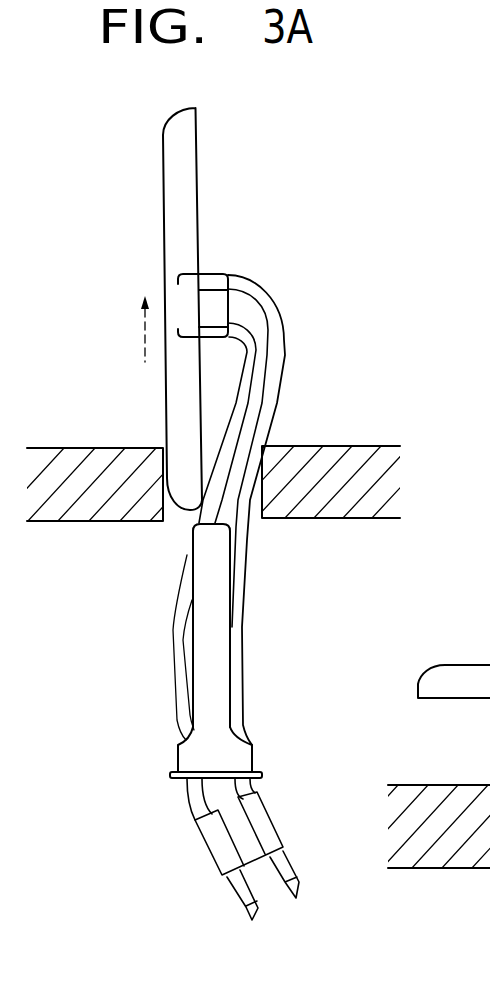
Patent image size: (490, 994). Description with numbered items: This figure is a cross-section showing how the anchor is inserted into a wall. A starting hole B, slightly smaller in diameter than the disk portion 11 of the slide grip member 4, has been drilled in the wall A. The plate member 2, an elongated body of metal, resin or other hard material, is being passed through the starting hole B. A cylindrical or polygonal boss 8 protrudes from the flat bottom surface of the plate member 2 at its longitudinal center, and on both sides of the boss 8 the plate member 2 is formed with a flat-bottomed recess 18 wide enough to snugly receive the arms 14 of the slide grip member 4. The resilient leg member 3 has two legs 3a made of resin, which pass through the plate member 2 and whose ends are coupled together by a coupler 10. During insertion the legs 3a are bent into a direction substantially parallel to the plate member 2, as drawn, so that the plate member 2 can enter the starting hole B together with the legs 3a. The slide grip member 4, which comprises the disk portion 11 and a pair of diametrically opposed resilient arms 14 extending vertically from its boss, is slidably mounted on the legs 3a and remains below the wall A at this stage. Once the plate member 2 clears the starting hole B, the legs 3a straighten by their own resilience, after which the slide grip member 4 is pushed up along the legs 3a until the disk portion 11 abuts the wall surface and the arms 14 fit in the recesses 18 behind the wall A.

The plate member 2 is at (173, 153).
The flat-bottomed recess 18 is at (218, 310).
The boss 8 is at (212, 280).
The resilient leg member 3 is at (285, 487).
The legs 3a is at (255, 382).
The wall A is at (385, 490).
The starting hole B is at (179, 511).
The resilient arms 14 is at (217, 614).
The slide grip member 4 is at (164, 748).
The disk portion 11 is at (180, 778).
The coupler 10 is at (238, 832).